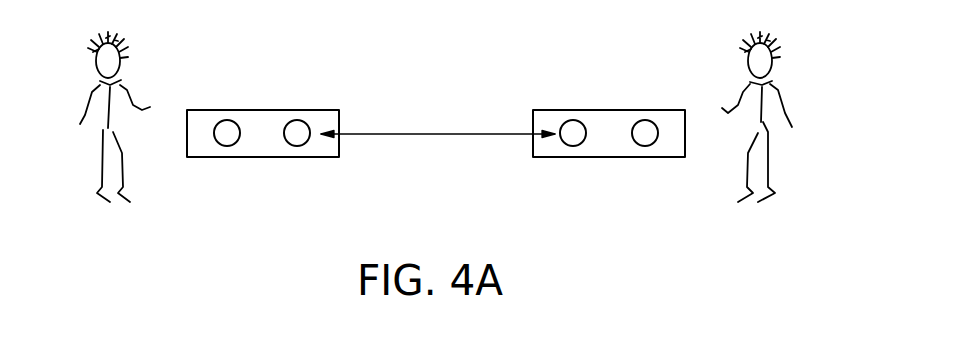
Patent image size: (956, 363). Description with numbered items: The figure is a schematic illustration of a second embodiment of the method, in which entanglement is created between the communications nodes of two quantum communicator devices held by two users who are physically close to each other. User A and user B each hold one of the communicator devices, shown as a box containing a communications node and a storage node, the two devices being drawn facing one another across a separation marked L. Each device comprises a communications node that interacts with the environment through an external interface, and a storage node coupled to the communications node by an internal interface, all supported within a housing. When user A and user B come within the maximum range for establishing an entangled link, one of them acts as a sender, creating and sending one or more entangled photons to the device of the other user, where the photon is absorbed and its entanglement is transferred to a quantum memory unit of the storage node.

The distance between devices L is at (432, 133).
The user A is at (108, 126).
The user B is at (763, 126).